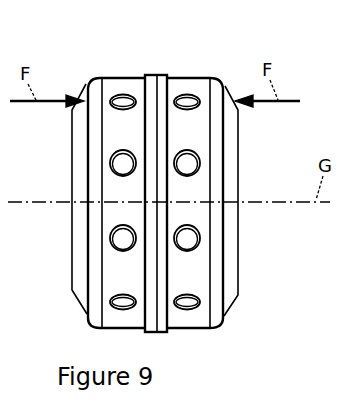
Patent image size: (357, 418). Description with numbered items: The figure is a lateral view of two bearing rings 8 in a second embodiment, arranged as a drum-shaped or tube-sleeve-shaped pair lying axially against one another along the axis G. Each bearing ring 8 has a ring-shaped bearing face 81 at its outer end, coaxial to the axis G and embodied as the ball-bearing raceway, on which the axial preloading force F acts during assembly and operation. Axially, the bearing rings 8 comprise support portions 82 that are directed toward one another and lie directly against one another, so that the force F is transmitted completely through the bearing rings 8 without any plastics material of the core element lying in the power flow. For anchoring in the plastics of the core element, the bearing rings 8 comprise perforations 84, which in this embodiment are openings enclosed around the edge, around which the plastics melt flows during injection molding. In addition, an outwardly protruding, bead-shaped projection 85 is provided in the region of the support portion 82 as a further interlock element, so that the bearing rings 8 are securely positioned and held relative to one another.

The bearing ring 8 is at (124, 66).
The bearing face 81 is at (86, 302).
The support portion 82 is at (143, 128).
The perforation 84 is at (121, 241).
The bead-shaped projection 85 is at (164, 75).